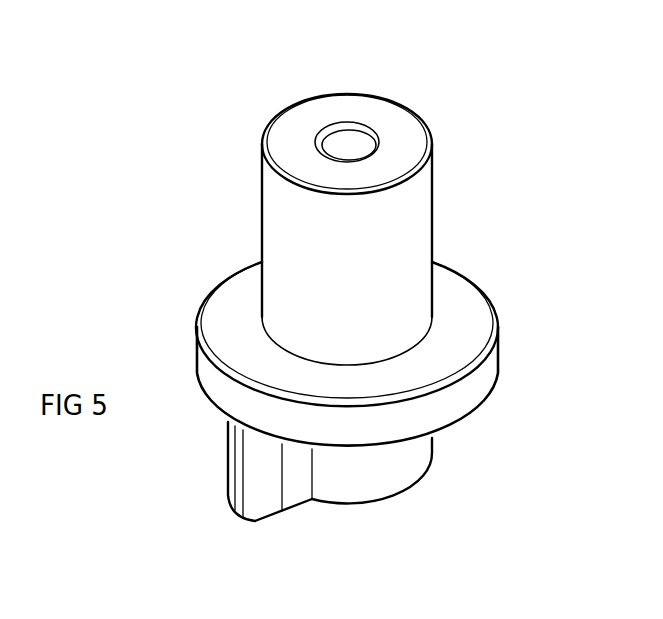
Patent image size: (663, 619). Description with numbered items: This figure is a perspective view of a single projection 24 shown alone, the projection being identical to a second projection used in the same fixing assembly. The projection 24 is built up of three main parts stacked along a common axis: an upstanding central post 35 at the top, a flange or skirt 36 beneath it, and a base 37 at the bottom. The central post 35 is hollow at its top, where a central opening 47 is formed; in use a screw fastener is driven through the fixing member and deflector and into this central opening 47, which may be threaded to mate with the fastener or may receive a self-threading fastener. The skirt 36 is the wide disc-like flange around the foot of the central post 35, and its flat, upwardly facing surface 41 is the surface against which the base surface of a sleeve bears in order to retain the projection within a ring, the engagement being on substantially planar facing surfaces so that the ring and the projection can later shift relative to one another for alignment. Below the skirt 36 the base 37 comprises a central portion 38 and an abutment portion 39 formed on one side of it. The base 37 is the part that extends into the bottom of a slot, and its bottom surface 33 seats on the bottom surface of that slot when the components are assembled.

The projection 24 is at (512, 105).
The central post 35 is at (290, 213).
The central opening 47 is at (342, 137).
The upwardly facing surface 41 is at (225, 307).
The skirt 36 is at (478, 383).
The base 37 is at (417, 459).
The central portion 38 is at (382, 480).
The bottom surface 33 is at (340, 502).
The abutment portion 39 is at (248, 482).